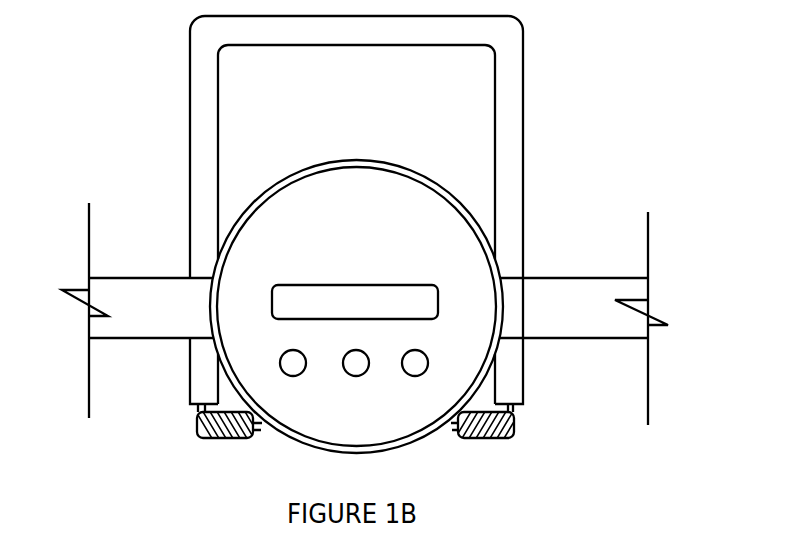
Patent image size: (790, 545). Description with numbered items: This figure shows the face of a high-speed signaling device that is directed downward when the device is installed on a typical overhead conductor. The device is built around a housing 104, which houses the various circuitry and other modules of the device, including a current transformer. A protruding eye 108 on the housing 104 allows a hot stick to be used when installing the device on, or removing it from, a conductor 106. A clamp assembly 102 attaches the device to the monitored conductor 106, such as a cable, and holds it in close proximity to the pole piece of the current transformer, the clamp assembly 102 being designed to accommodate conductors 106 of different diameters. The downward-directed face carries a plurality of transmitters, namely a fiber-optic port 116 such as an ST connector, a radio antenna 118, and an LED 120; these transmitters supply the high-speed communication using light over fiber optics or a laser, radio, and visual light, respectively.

The clamp assembly 102 is at (523, 102).
The housing 104 is at (357, 159).
The conductor 106 is at (148, 277).
The protruding eye 108 is at (372, 285).
The fiber-optic port 116 is at (295, 377).
The radio antenna 118 is at (357, 377).
The LED 120 is at (413, 377).